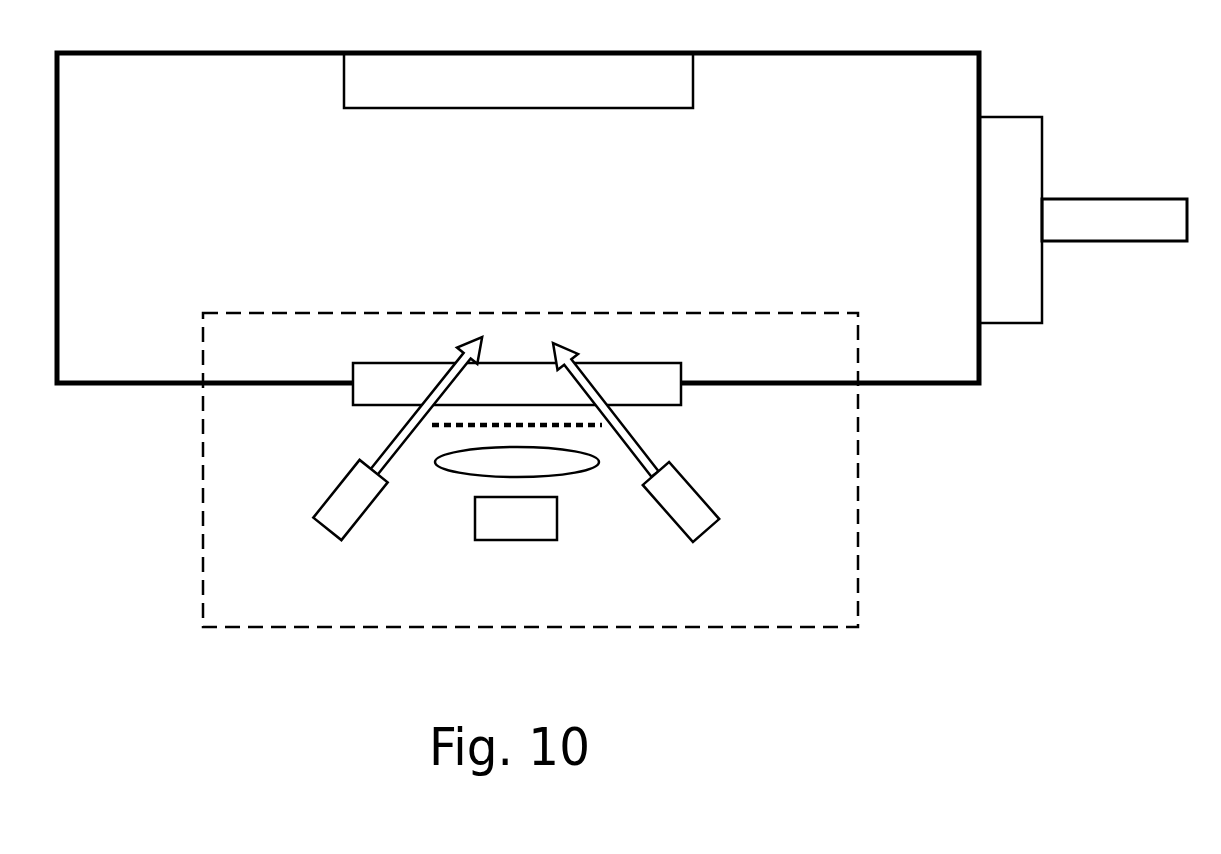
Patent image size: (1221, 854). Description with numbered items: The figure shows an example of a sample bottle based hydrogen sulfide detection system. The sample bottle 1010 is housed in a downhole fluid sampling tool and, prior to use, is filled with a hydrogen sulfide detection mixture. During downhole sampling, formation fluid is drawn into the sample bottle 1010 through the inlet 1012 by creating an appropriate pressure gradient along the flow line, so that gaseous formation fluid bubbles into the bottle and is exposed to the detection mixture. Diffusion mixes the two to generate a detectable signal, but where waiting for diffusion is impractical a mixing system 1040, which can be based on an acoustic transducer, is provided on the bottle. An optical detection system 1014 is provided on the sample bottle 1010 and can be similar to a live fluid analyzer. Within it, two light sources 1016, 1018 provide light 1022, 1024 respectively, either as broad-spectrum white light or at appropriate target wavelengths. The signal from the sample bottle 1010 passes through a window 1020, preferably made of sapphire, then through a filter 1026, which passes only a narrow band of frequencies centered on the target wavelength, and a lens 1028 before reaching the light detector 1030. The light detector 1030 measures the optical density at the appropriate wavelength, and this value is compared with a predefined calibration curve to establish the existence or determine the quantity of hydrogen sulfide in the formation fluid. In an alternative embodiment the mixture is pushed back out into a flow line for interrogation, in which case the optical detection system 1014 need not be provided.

The sample bottle 1010 is at (208, 131).
The mixing system 1040 is at (432, 101).
The inlet 1012 is at (1097, 224).
The optical detection system 1014 is at (858, 562).
The window 1020 is at (423, 394).
The light 1022 is at (410, 425).
The light 1024 is at (620, 427).
The light source 1016 is at (340, 517).
The light source 1018 is at (678, 488).
The filter 1026 is at (450, 425).
The lens 1028 is at (583, 471).
The light detector 1030 is at (550, 532).